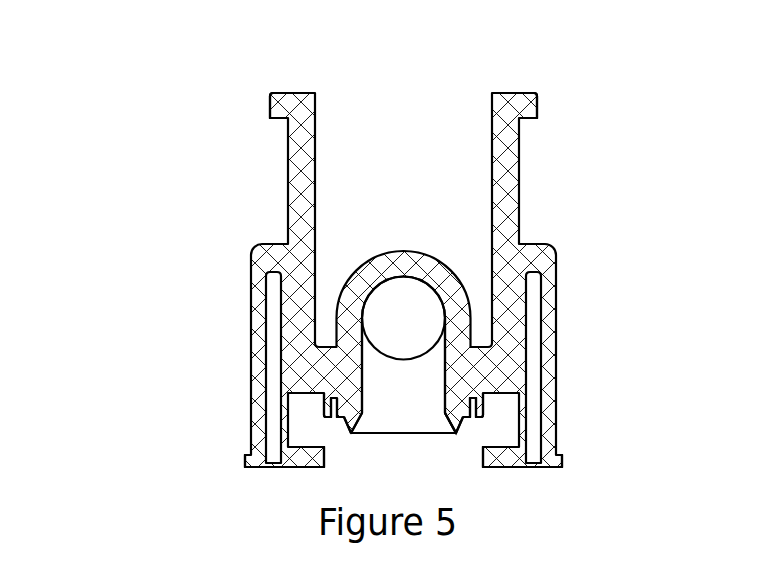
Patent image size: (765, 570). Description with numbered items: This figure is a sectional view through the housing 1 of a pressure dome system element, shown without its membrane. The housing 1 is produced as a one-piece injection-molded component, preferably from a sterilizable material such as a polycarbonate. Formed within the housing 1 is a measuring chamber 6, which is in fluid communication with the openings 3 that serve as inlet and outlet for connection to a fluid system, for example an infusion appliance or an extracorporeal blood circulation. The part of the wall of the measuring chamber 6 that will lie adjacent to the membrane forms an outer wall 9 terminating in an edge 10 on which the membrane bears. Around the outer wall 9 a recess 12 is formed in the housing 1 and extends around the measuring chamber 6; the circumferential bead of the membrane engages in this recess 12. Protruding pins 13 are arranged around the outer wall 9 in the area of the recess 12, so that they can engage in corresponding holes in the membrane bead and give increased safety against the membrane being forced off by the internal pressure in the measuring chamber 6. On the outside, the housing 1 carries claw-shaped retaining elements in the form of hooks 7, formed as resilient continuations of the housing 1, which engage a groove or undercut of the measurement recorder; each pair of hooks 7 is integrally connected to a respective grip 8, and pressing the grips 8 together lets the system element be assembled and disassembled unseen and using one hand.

The housing 1 is at (167, 177).
The openings 3 is at (415, 302).
The measuring chamber 6 is at (418, 390).
The hooks 7 is at (292, 458).
The grip 8 is at (272, 100).
The outer wall 9 is at (482, 398).
The edge 10 is at (457, 438).
The recess 12 is at (326, 404).
The pins 13 is at (325, 408).